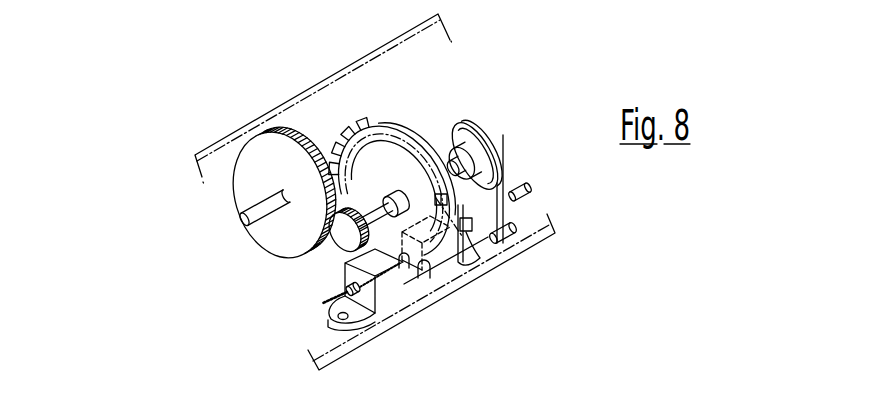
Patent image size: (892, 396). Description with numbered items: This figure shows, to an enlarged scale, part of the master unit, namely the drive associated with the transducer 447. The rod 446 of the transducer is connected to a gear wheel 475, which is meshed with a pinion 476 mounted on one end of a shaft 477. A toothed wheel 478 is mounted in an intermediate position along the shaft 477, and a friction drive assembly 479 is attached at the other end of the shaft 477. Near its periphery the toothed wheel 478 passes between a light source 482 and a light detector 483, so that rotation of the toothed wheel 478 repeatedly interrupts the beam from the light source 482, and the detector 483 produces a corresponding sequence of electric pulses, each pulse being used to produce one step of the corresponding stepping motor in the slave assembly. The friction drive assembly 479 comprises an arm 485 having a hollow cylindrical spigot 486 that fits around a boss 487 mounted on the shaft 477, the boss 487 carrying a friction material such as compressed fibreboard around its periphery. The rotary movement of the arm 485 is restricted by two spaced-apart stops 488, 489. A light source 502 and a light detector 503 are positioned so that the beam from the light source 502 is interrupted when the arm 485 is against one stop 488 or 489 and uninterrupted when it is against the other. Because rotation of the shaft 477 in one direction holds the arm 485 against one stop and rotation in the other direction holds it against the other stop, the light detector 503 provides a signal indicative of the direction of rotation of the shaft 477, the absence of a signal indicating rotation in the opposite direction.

The rod 446 is at (242, 214).
The transducer 447 is at (337, 54).
The gear wheel 475 is at (263, 147).
The pinion 476 is at (333, 230).
The shaft 477 is at (404, 124).
The toothed wheel 478 is at (347, 133).
The friction drive assembly 479 is at (456, 116).
The light source 482 is at (378, 293).
The light detector 483 is at (451, 300).
The arm 485 is at (488, 190).
The hollow cylindrical spigot 486 is at (474, 142).
The boss 487 is at (444, 146).
The stop 488 is at (509, 225).
The stop 489 is at (396, 188).
The light source 502 is at (485, 267).
The light detector 503 is at (530, 186).